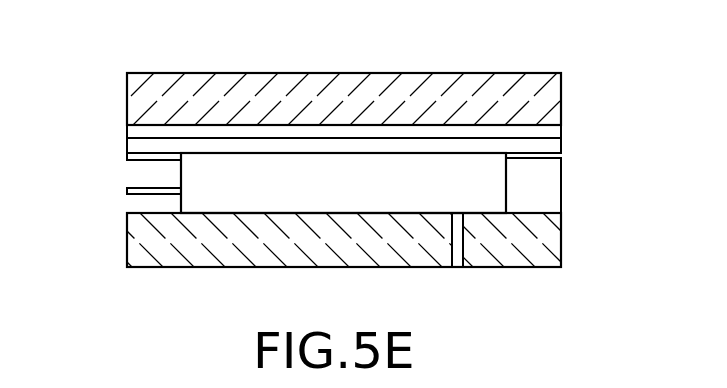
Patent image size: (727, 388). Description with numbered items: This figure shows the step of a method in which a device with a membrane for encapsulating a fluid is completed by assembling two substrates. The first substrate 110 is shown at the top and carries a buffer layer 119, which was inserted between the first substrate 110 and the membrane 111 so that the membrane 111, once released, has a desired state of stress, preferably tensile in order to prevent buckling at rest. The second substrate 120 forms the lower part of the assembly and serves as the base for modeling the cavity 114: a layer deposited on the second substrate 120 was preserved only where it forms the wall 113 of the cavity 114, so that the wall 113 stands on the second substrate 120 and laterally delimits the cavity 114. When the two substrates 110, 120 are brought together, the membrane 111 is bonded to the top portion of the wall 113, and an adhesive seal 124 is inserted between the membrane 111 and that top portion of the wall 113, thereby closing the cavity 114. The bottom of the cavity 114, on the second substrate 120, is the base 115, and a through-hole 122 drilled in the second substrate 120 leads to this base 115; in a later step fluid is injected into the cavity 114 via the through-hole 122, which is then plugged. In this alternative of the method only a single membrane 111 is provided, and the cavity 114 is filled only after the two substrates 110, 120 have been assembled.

The first substrate 110 is at (547, 102).
The membrane 111 is at (547, 143).
The wall of the cavity 113 is at (548, 187).
The cavity 114 is at (242, 187).
The base of the cavity 115 is at (373, 213).
The buffer layer 119 is at (450, 130).
The second substrate 120 is at (548, 238).
The through-hole 122 is at (142, 192).
The adhesive seal 124 is at (142, 157).